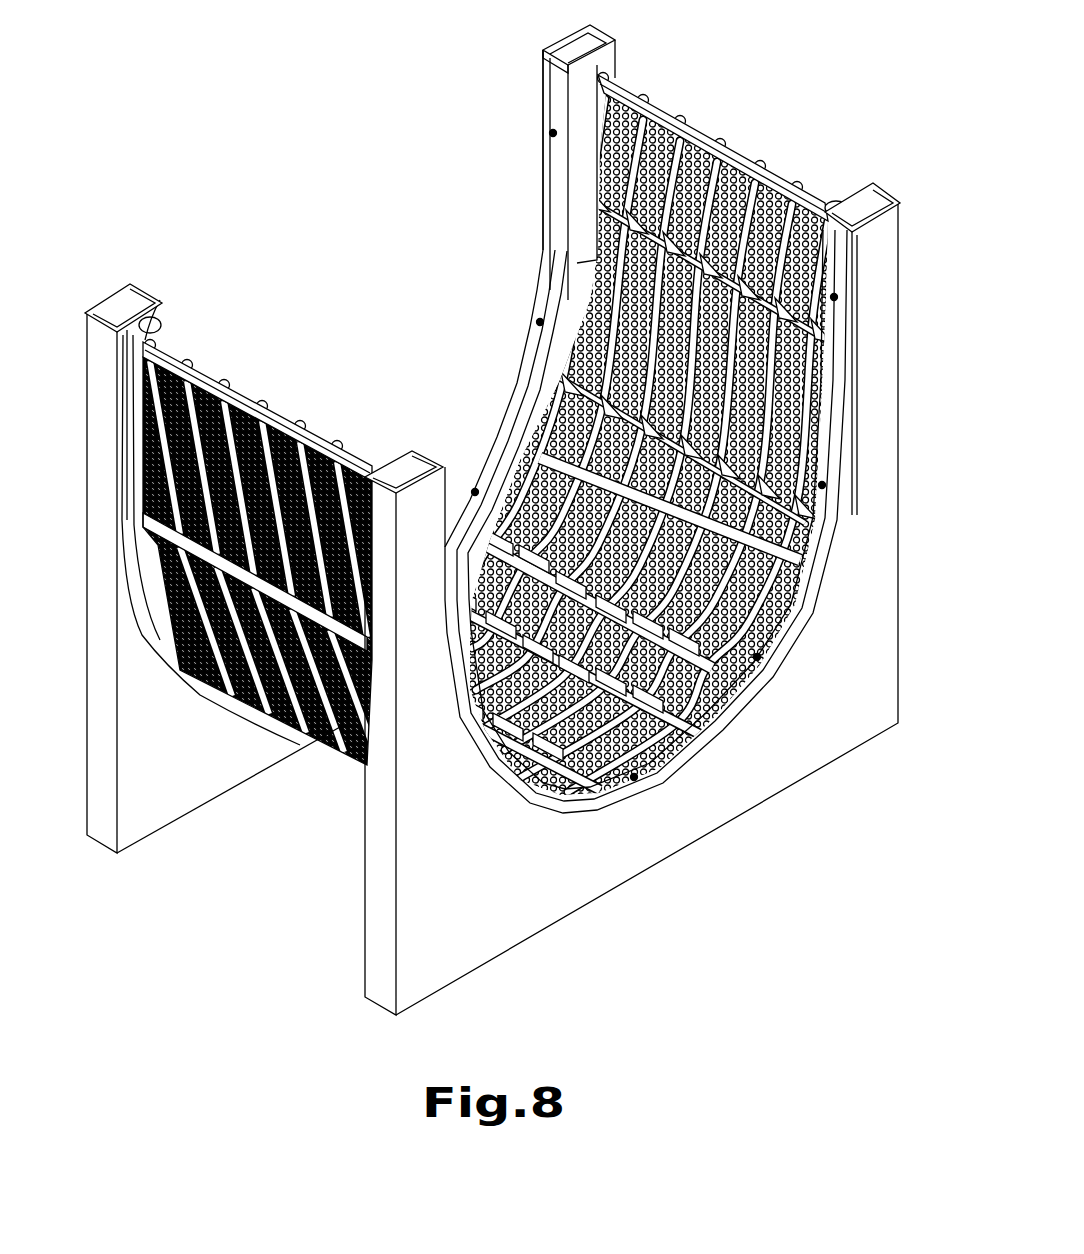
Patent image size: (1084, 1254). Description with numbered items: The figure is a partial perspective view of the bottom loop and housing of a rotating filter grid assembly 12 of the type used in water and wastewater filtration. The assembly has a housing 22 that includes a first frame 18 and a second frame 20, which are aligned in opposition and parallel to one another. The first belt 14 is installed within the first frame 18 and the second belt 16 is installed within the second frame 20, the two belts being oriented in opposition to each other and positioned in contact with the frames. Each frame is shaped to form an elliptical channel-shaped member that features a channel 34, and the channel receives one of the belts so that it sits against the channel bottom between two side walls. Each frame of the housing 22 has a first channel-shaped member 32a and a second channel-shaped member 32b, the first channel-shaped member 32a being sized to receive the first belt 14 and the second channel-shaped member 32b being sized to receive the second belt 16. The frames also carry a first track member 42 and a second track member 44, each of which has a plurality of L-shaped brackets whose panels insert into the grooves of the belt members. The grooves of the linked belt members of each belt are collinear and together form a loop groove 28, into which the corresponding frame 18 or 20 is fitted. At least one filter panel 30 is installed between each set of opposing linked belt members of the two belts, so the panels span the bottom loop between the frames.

The rotating filter grid assembly 12 is at (322, 165).
The first belt 14 is at (598, 58).
The second belt 16 is at (853, 200).
The first frame 18 is at (100, 765).
The second frame 20 is at (382, 877).
The housing 22 is at (712, 870).
The loop groove 28 is at (157, 322).
The filter panel 30 is at (708, 135).
The first channel-shaped member 32a is at (548, 45).
The second channel-shaped member 32b is at (898, 190).
The channel 34 is at (116, 292).
The first track member 42 is at (555, 88).
The second track member 44 is at (445, 472).